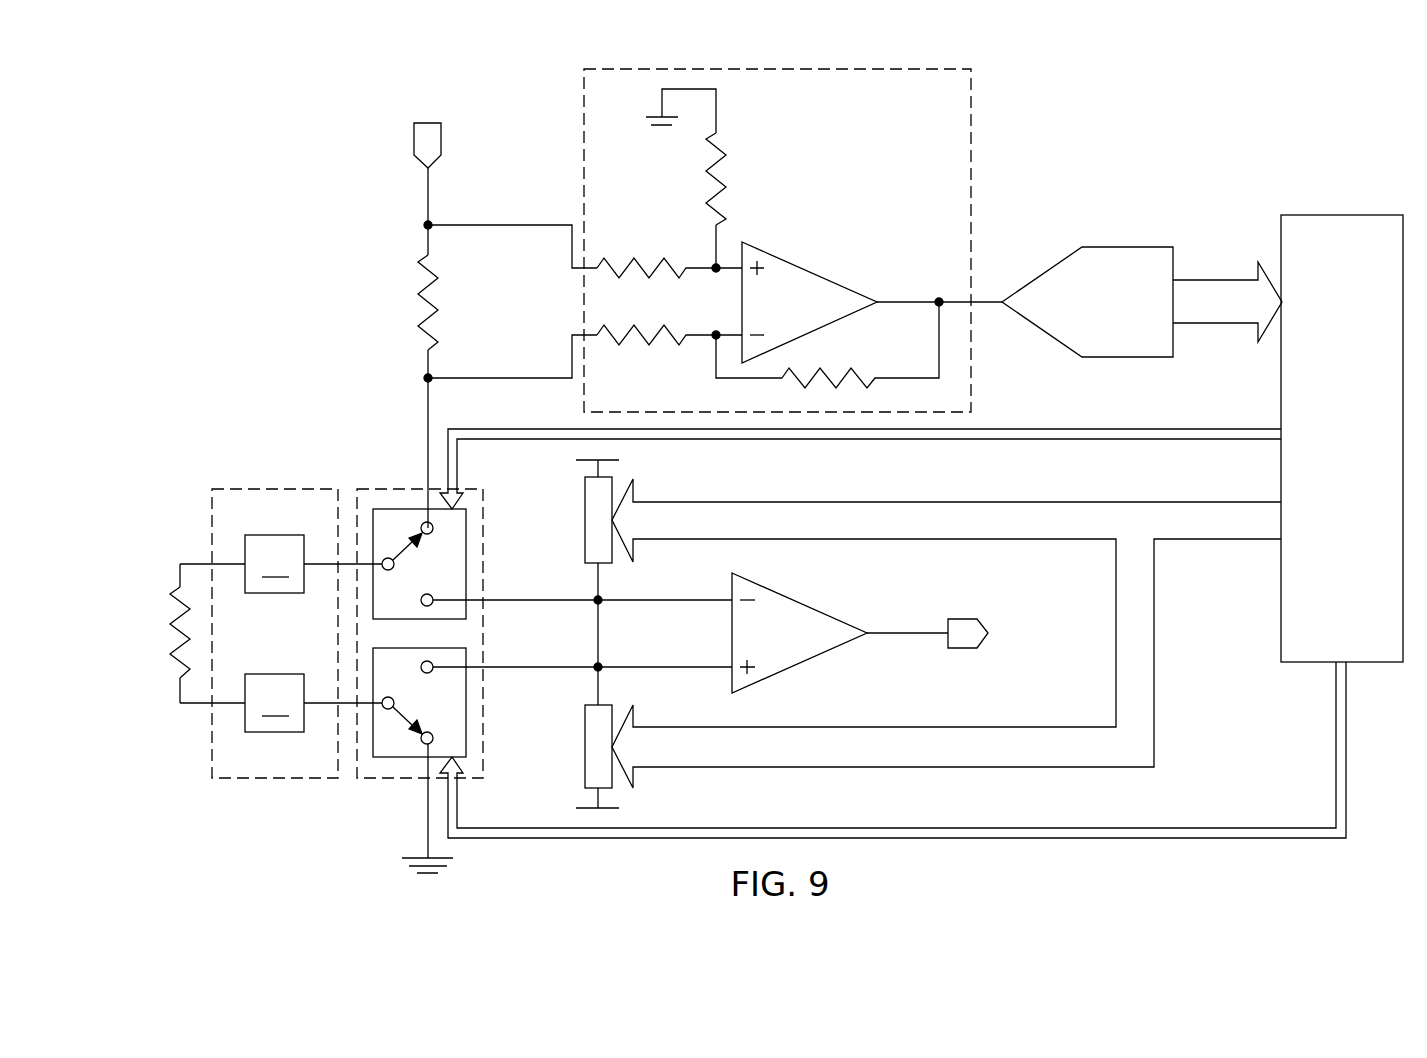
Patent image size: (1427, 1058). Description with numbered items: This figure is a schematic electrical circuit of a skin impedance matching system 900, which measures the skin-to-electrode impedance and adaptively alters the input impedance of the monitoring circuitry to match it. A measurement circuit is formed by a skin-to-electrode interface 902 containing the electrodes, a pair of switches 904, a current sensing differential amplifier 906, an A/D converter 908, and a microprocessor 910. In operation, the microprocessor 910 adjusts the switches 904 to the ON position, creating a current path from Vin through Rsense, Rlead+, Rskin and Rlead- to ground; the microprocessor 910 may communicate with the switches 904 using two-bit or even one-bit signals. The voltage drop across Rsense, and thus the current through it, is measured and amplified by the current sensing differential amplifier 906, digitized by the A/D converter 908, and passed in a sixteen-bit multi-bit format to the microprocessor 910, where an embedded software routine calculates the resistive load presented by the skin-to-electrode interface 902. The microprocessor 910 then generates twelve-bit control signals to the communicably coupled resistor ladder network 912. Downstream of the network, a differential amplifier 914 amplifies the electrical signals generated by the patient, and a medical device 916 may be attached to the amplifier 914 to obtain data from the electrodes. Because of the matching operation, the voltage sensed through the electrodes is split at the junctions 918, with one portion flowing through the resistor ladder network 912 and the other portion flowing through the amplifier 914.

The skin impedance matching system 900 is at (268, 241).
The skin-to-electrode interface 902 is at (275, 488).
The pair of switches 904 is at (388, 488).
The current sensing differential amplifier 906 is at (975, 126).
The A/D converter 908 is at (1130, 247).
The microprocessor 910 is at (1330, 458).
The resistor ladder network 912 is at (585, 487).
The differential amplifier 914 is at (798, 600).
The medical device 916 is at (963, 619).
The junctions 918 is at (598, 600).